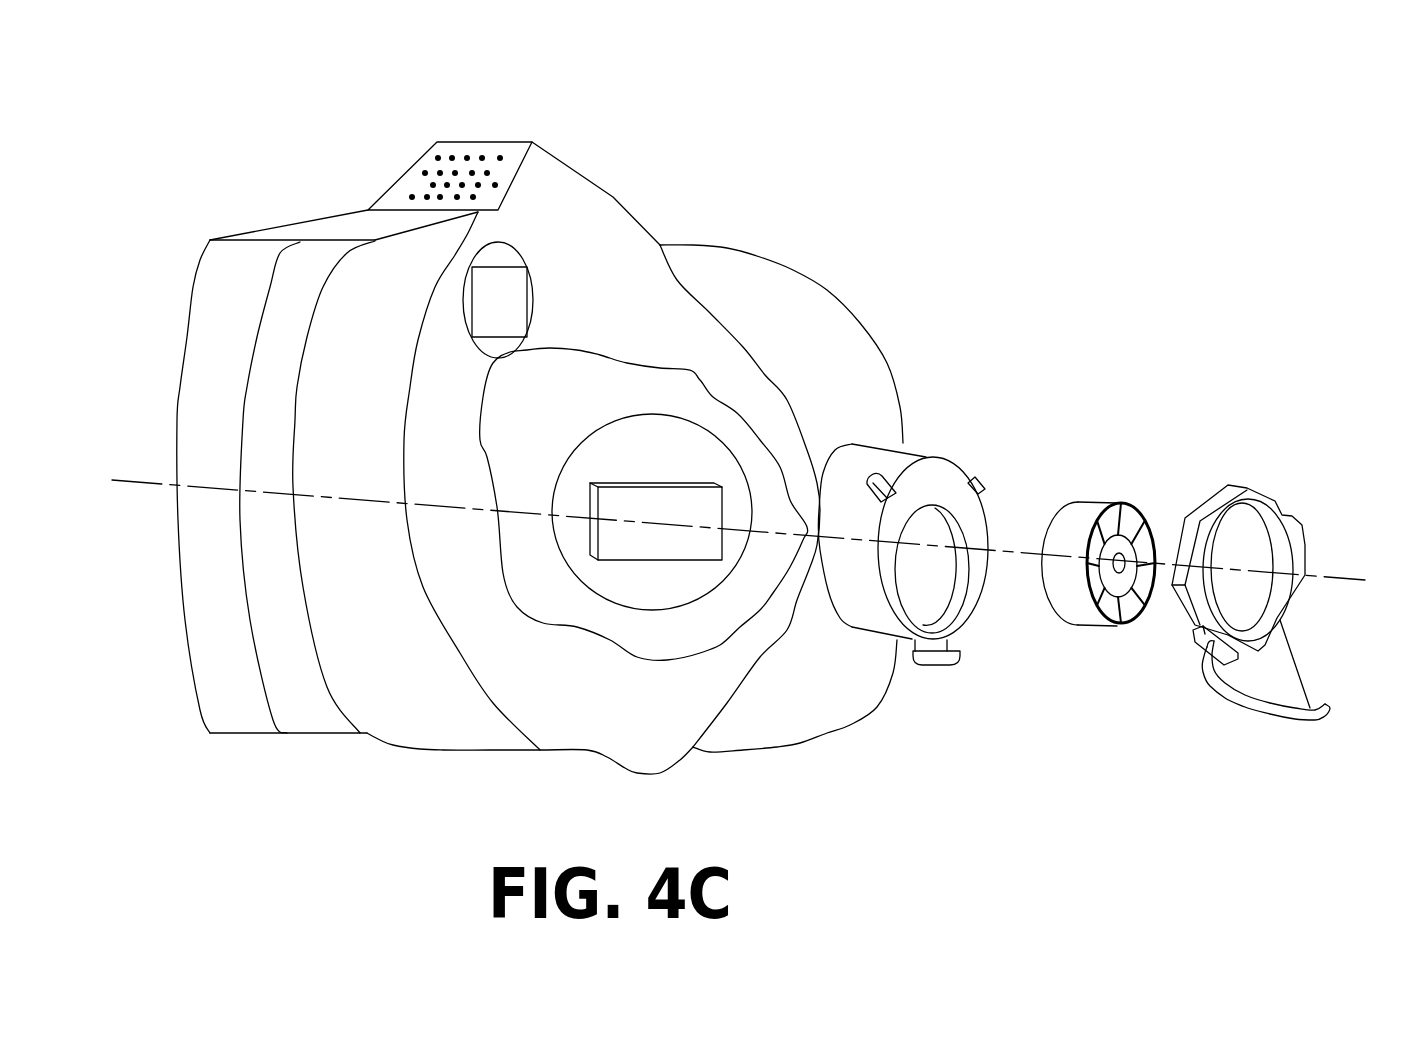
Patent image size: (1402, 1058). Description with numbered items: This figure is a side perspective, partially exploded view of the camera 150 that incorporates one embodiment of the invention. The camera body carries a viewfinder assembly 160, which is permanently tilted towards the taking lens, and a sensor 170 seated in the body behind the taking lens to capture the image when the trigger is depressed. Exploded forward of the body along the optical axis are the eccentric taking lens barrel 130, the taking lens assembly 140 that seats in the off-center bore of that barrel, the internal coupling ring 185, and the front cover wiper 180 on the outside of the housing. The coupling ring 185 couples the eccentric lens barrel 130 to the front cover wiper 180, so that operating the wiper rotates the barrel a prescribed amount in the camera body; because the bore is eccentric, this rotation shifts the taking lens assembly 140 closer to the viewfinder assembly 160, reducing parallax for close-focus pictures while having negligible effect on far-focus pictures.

The camera 150 is at (760, 263).
The viewfinder assembly 160 is at (462, 246).
The sensor 170 is at (700, 483).
The eccentric taking lens barrel 130 is at (960, 467).
The taking lens assembly 140 is at (1087, 500).
The front cover wiper 180 is at (1303, 727).
The internal coupling ring 185 is at (1180, 620).